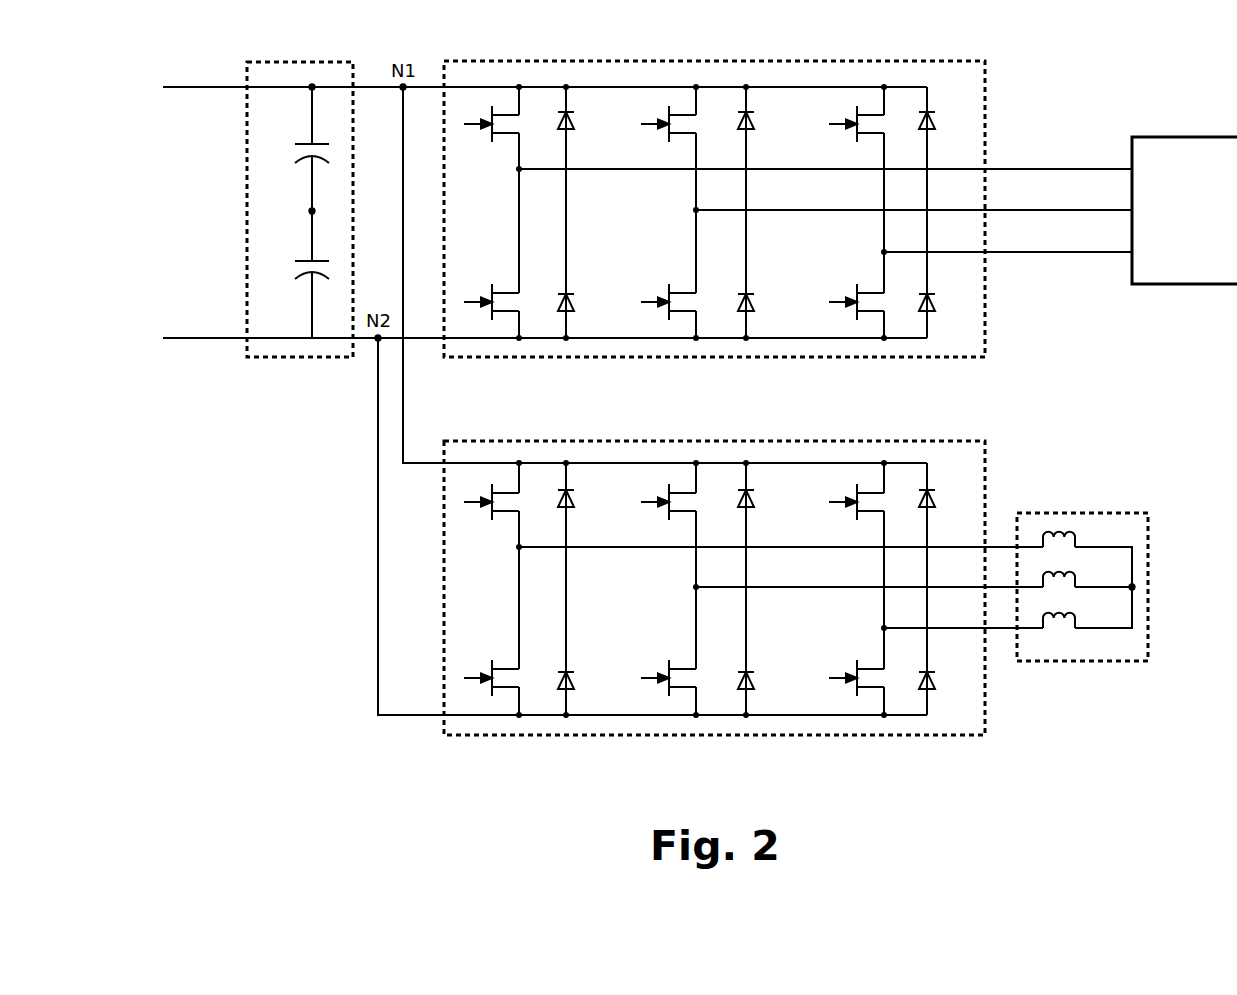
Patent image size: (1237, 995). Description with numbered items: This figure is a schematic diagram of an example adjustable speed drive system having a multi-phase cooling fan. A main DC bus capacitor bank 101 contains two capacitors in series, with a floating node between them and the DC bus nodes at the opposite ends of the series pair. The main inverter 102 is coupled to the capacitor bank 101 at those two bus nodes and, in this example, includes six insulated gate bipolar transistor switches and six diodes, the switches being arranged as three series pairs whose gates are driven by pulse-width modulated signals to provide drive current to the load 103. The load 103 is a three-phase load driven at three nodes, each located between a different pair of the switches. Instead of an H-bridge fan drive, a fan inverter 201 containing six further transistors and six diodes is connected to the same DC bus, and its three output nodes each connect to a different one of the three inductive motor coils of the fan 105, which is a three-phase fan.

The main DC bus capacitor bank 101 is at (247, 250).
The main inverter 102 is at (985, 112).
The load 103 is at (1172, 231).
The fan inverter 201 is at (985, 455).
The fan 105 is at (1040, 661).